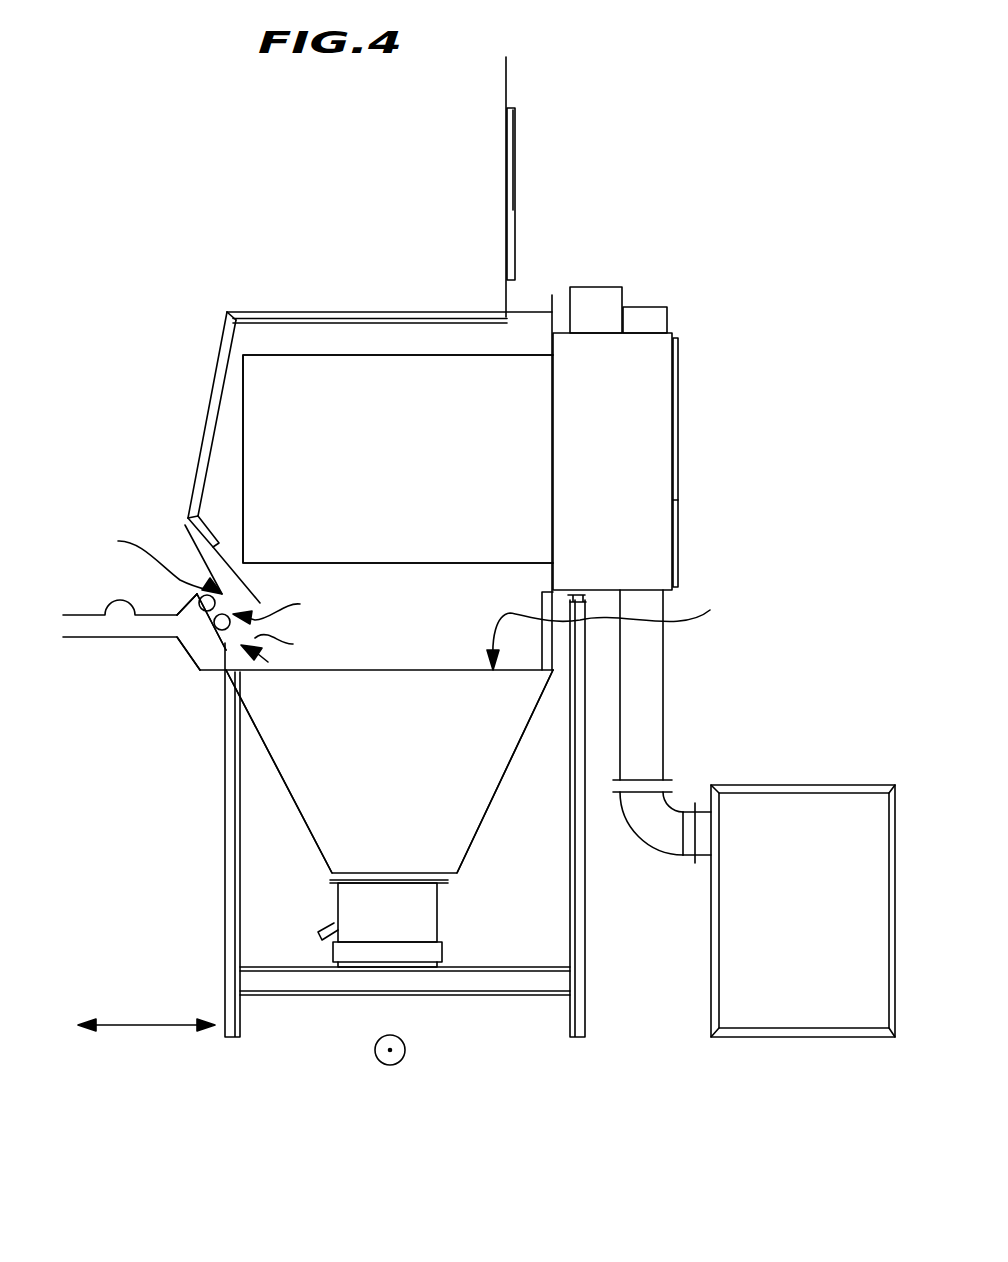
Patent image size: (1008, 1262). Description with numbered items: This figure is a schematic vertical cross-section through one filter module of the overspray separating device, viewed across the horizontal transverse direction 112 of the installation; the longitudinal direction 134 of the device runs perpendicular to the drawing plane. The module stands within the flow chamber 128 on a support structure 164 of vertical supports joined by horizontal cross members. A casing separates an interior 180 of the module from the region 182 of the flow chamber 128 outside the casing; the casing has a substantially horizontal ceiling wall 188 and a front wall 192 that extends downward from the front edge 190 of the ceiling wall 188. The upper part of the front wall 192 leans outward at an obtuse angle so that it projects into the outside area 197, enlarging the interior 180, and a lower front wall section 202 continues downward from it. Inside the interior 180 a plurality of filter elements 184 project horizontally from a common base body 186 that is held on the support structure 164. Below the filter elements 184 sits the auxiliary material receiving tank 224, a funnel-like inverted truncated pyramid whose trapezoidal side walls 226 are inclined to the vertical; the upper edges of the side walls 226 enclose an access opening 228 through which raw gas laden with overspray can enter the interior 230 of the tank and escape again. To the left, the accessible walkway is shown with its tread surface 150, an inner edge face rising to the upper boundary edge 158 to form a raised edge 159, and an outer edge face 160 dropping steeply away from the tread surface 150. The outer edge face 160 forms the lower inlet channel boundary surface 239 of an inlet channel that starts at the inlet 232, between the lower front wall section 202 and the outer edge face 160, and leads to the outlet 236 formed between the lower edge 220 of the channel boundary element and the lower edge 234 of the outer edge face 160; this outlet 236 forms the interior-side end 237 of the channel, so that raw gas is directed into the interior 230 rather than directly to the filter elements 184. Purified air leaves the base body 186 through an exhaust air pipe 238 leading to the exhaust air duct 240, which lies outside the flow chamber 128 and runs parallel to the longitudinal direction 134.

The horizontal transverse direction 112 is at (142, 1027).
The flow chamber 128 is at (140, 335).
The longitudinal direction 134 is at (405, 1050).
The tread surface 150 is at (108, 613).
The upper boundary edge 158 is at (198, 594).
The raised edge 159 is at (194, 600).
The outer edge face 160 is at (183, 655).
The support structure 164 is at (222, 910).
The interior 180 is at (320, 411).
The region of the flow chamber 182 is at (140, 379).
The filter elements 184 is at (416, 429).
The base body 186 is at (643, 383).
The ceiling wall 188 is at (333, 317).
The front edge 190 is at (224, 310).
The front wall 192 is at (207, 401).
The outside area 197 is at (148, 467).
The lower front wall section 202 is at (208, 561).
The lower edge 220 is at (260, 603).
The auxiliary material receiving tank 224 is at (300, 825).
The side walls 226 is at (275, 772).
The access opening 228 is at (622, 631).
The interior of the auxiliary material receiving tank 230 is at (411, 789).
The inlet 232 is at (157, 552).
The lower edge 234 is at (297, 644).
The outlet 236 is at (298, 609).
The end 237 is at (268, 662).
The exhaust air pipes 238 is at (643, 678).
The lower inlet channel boundary surface 239 is at (178, 638).
The exhaust air duct 240 is at (824, 833).